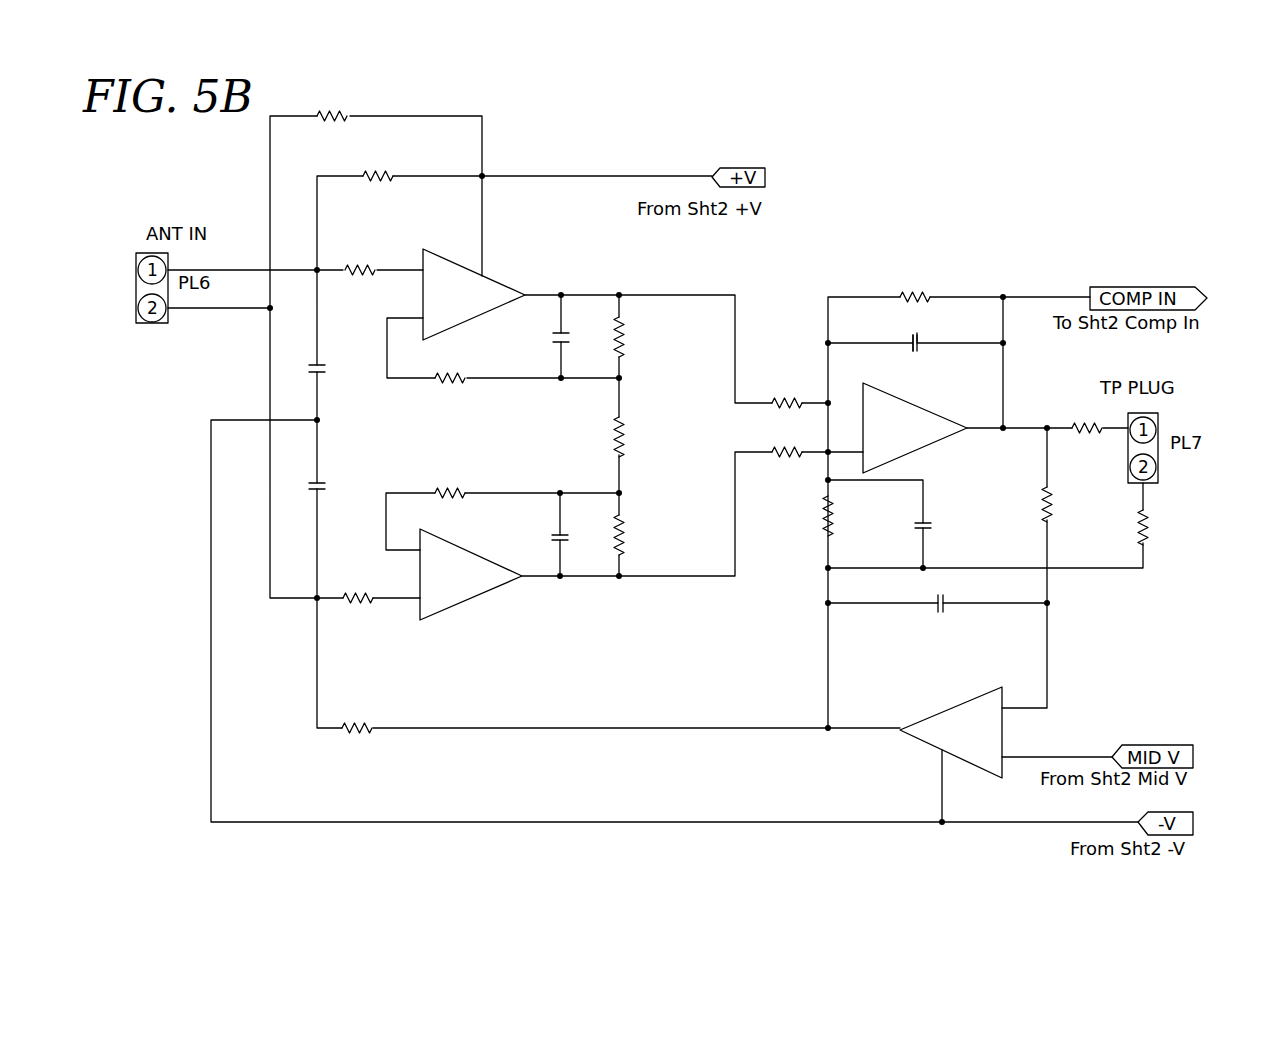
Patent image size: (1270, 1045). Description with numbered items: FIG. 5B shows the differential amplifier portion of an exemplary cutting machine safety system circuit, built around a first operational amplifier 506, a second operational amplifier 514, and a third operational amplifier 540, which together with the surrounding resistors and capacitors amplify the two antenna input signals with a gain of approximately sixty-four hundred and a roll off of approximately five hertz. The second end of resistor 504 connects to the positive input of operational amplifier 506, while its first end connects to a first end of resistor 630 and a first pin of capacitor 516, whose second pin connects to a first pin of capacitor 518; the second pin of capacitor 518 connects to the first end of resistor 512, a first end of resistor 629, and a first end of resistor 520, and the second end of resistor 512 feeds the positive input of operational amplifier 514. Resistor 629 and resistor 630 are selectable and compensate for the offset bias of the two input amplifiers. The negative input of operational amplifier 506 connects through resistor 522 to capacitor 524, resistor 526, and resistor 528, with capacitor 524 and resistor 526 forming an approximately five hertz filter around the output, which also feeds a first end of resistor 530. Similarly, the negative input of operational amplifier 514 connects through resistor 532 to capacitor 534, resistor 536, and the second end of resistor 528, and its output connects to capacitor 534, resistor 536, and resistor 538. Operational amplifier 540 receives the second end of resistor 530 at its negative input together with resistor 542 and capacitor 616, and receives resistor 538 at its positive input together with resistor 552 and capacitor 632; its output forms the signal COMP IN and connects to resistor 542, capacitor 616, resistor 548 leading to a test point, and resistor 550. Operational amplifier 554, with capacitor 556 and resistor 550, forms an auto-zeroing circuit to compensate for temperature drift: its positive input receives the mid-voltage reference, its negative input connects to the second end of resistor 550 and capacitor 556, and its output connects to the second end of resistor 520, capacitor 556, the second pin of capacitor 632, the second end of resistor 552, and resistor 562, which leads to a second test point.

The resistor R1 504 is at (385, 258).
The operational amplifier U2-A 506 is at (476, 293).
The resistor R2 512 is at (383, 620).
The operational amplifier U2-B 514 is at (467, 573).
The capacitor C3 516 is at (275, 371).
The capacitor C4 518 is at (253, 489).
The resistor R12 520 is at (382, 751).
The resistor R3 522 is at (424, 397).
The capacitor C5 524 is at (592, 299).
The resistor R7 526 is at (663, 356).
The resistor R5 528 is at (665, 451).
The resistor R8 530 is at (770, 333).
The resistor R4 532 is at (478, 481).
The capacitor C6 534 is at (593, 582).
The resistor R6 536 is at (672, 526).
The resistor R9 538 is at (773, 525).
The operational amplifier U2-C 540 is at (909, 425).
The resistor R10 542 is at (889, 279).
The resistor R30 548 is at (1061, 412).
The resistor R13 550 is at (997, 488).
The resistor R11 552 is at (865, 531).
The operational amplifier U2-D 554 is at (957, 733).
The capacitor C1 556 is at (951, 627).
The resistor R31 562 is at (1198, 518).
The capacitor C24 616 is at (867, 319).
The resistor R34 629 is at (353, 111).
The resistor R35 630 is at (401, 171).
The capacitor C23 632 is at (954, 531).